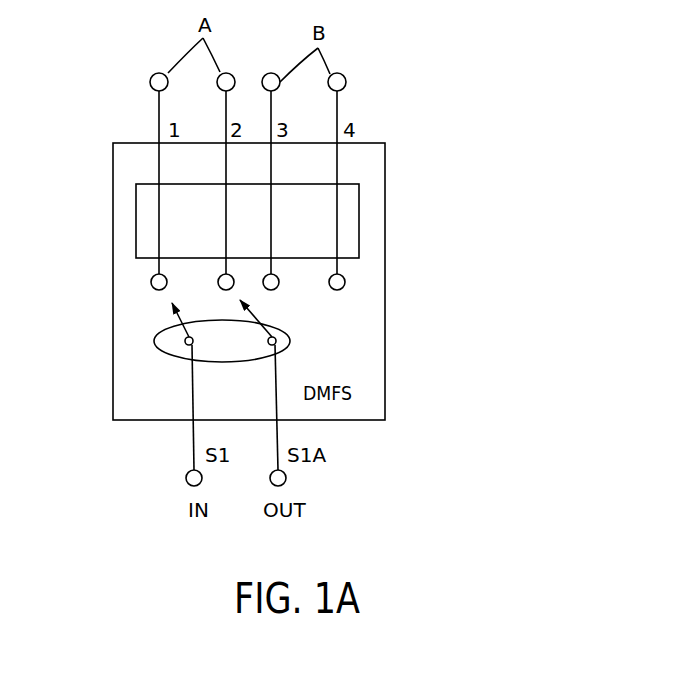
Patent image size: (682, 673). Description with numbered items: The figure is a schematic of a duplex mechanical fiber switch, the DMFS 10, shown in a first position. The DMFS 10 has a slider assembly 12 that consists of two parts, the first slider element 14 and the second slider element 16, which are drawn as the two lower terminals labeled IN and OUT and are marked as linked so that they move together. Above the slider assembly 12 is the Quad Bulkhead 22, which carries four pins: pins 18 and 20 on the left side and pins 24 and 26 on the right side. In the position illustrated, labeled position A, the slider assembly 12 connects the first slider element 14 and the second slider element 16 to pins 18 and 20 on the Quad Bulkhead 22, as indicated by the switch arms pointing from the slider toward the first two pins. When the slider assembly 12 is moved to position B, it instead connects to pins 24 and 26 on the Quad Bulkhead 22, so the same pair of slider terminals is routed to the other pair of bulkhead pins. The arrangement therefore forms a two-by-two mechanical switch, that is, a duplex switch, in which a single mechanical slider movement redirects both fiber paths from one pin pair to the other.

The DMFS 10 is at (72, 377).
The slider assembly 12 is at (291, 341).
The S1 14 is at (186, 481).
The S1A 16 is at (270, 483).
The pin 18 is at (150, 78).
The pin 20 is at (231, 74).
The Quad Bulkhead 22 is at (322, 223).
The pin 24 is at (276, 74).
The pin 26 is at (346, 80).